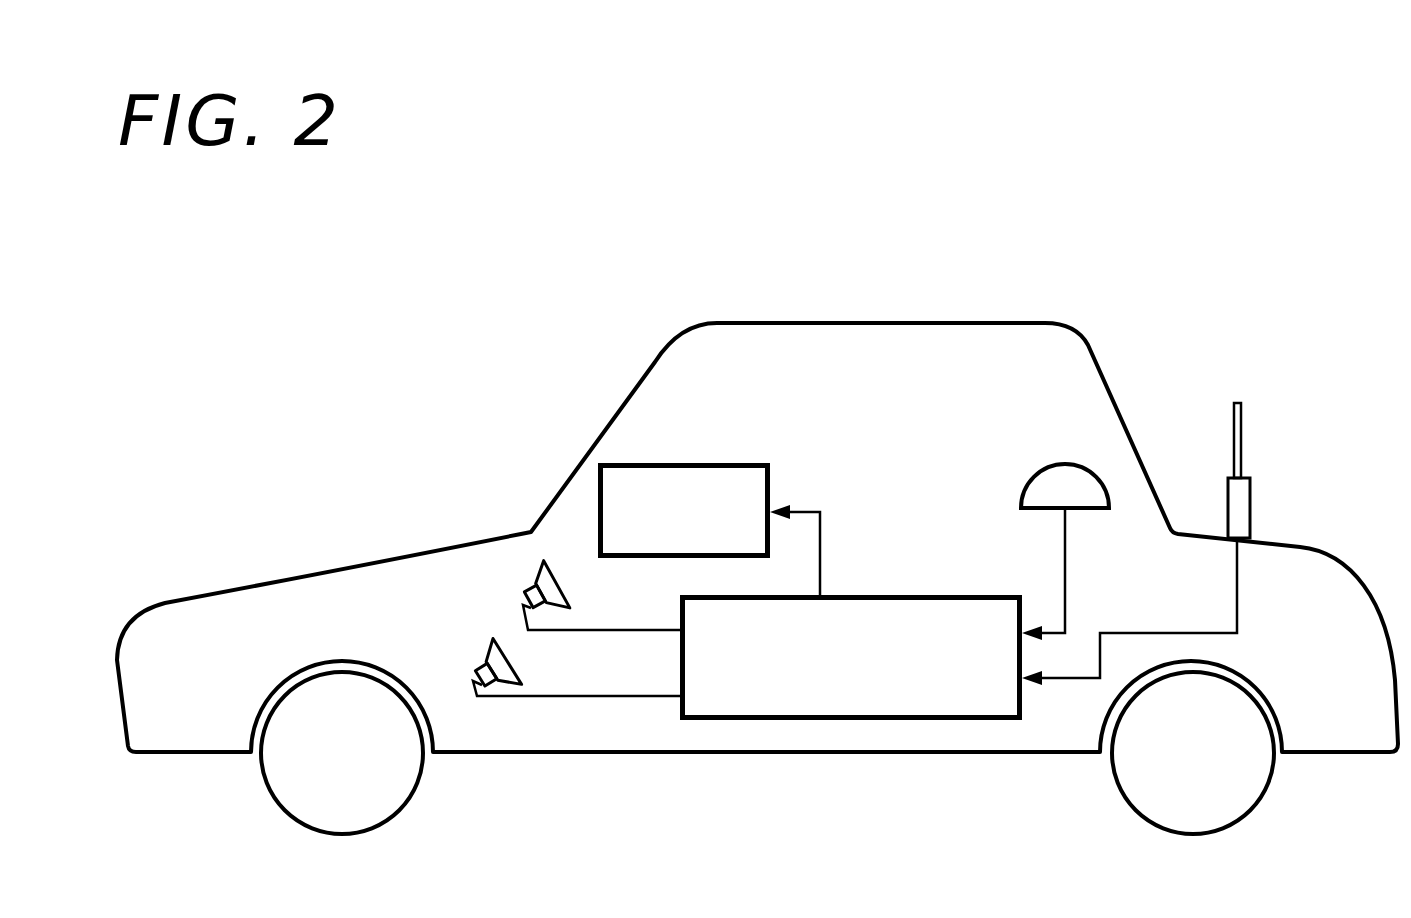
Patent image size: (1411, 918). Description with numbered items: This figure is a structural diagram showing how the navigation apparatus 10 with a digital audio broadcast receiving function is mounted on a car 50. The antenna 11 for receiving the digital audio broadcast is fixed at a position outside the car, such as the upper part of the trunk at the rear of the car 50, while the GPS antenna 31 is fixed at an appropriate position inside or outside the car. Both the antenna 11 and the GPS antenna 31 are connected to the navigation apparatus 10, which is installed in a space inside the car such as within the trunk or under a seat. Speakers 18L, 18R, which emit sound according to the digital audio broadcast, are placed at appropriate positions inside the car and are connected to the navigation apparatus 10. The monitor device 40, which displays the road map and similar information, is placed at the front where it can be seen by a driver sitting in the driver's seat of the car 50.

The navigation apparatus 10 is at (877, 595).
The antenna 11 is at (1243, 435).
The speaker 18L is at (517, 668).
The speaker 18R is at (562, 583).
The GPS antenna 31 is at (1065, 463).
The monitor device 40 is at (743, 463).
The car 50 is at (720, 754).